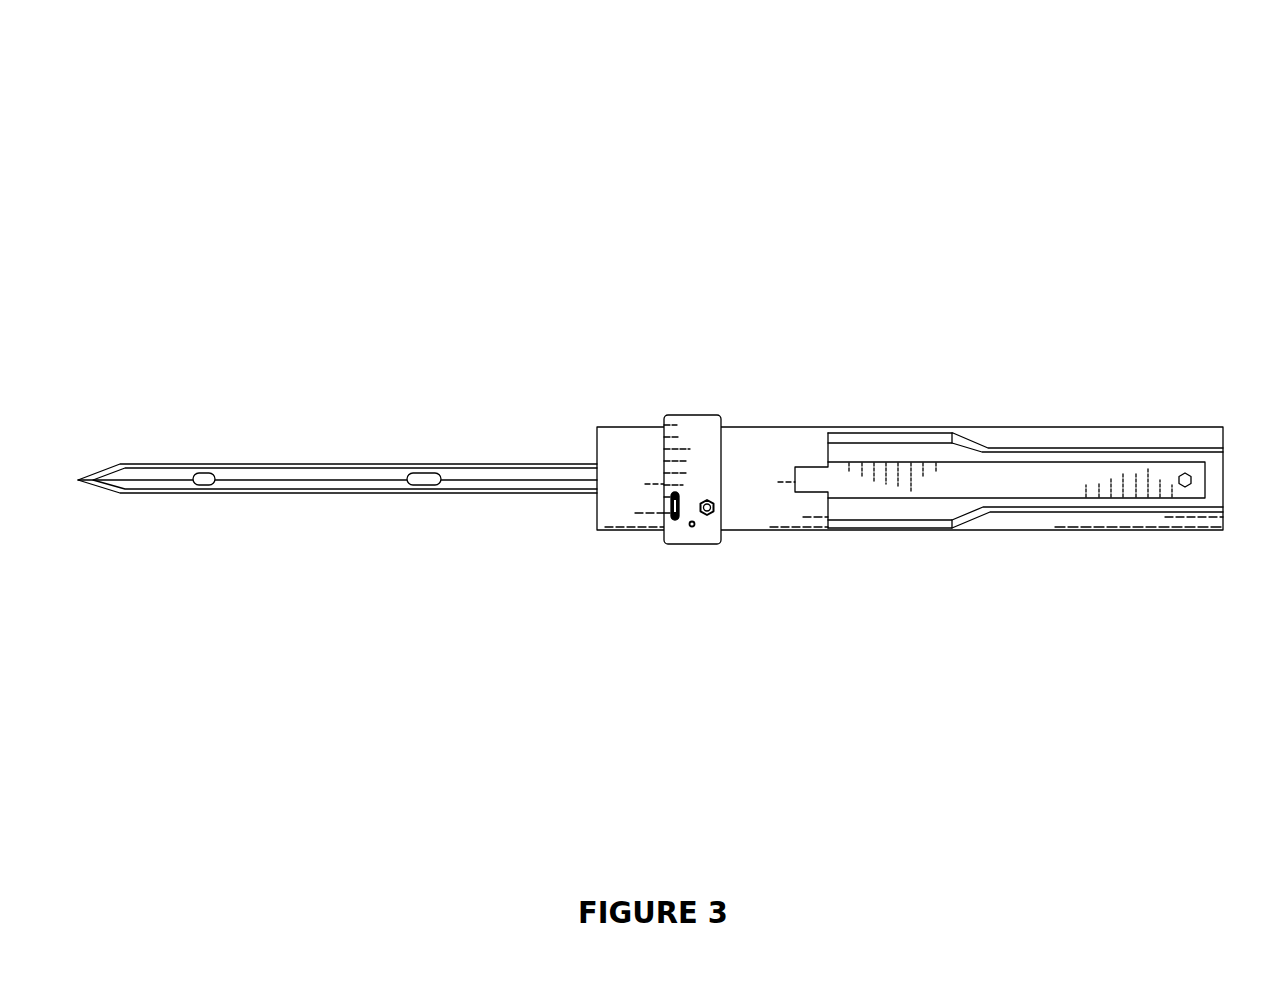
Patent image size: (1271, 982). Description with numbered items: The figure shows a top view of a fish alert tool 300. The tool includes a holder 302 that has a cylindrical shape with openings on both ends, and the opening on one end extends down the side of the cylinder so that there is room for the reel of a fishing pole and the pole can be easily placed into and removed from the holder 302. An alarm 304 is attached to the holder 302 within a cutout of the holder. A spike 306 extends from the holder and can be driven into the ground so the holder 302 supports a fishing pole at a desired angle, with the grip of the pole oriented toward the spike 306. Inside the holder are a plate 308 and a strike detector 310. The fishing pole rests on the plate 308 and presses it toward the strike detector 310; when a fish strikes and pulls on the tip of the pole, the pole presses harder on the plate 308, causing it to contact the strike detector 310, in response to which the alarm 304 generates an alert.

The fish alert tool 300 is at (1127, 45).
The holder 302 is at (960, 412).
The alarm 304 is at (686, 415).
The spike 306 is at (311, 503).
The plate 308 is at (910, 504).
The strike detector 310 is at (1185, 500).